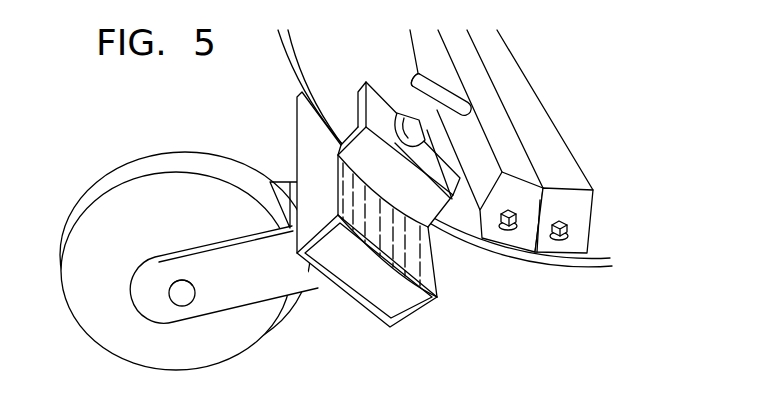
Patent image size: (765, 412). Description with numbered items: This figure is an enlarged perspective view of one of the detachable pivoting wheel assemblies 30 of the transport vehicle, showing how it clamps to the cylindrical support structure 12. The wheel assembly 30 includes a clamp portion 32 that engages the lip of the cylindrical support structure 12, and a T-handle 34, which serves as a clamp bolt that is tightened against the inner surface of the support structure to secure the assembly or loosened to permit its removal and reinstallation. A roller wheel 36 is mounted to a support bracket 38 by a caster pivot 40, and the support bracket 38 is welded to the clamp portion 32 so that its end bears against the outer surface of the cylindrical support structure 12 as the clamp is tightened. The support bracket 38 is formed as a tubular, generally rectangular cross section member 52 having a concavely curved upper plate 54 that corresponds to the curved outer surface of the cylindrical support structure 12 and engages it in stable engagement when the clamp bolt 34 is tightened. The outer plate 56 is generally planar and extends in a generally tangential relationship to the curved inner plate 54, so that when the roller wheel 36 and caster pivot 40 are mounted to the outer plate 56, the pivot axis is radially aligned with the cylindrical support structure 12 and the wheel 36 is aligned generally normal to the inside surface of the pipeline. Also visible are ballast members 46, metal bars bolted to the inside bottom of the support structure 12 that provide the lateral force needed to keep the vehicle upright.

The cylindrical support structure 12 is at (593, 262).
The pivoting wheel assembly 30 is at (289, 131).
The clamp portion 32 is at (377, 103).
The T-handle 34 is at (435, 77).
The roller wheel 36 is at (145, 195).
The support bracket 38 is at (310, 168).
The caster pivot 40 is at (318, 278).
The ballast members 46 is at (503, 137).
The tubular rectangular cross section member 52 is at (410, 313).
The concavely curved upper plate 54 is at (417, 258).
The outer plate 56 is at (363, 307).